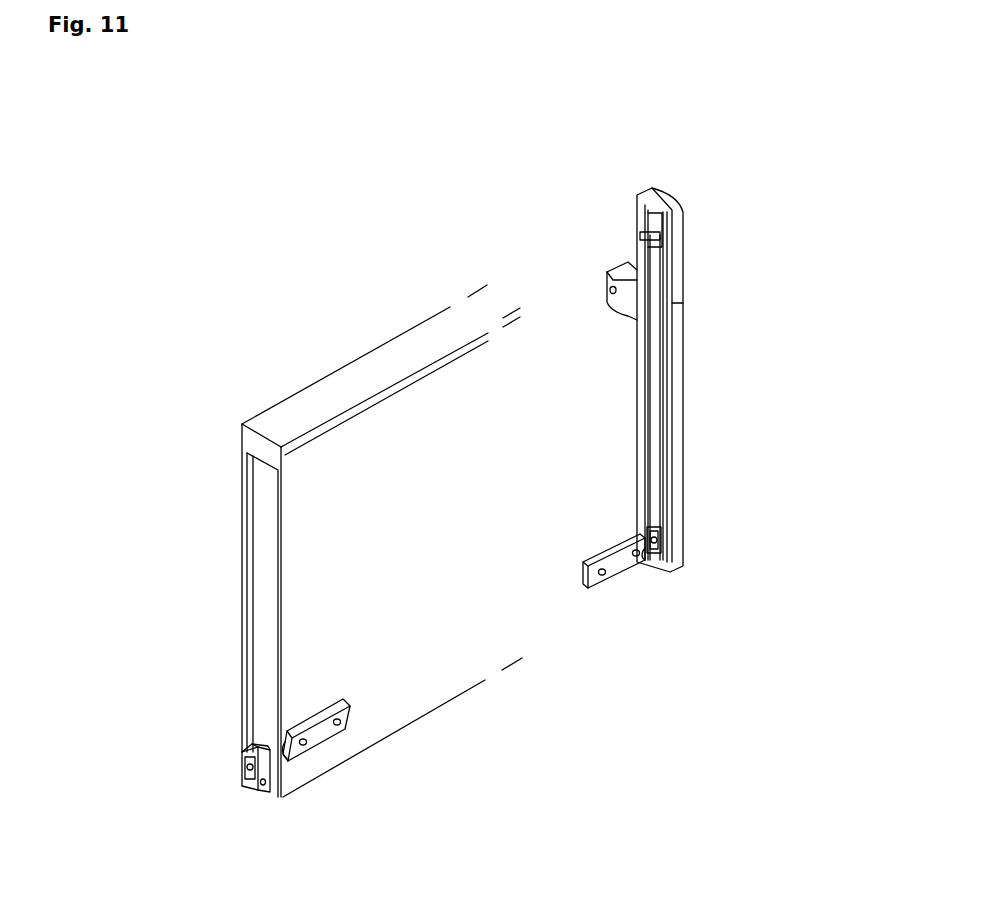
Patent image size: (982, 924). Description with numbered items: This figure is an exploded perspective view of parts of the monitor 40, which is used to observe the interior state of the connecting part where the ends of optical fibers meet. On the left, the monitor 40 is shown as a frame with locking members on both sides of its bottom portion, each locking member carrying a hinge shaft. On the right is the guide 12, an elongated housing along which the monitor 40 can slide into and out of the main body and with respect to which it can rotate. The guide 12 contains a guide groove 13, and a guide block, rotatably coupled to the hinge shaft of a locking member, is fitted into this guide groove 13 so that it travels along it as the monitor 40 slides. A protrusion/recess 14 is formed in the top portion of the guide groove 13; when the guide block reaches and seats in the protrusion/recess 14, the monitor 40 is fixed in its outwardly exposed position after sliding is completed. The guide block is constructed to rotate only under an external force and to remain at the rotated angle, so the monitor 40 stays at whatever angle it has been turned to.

The guide 12 is at (680, 240).
The guide groove 13 is at (653, 402).
The protrusion/recess 14 is at (650, 243).
The monitor 40 is at (335, 392).